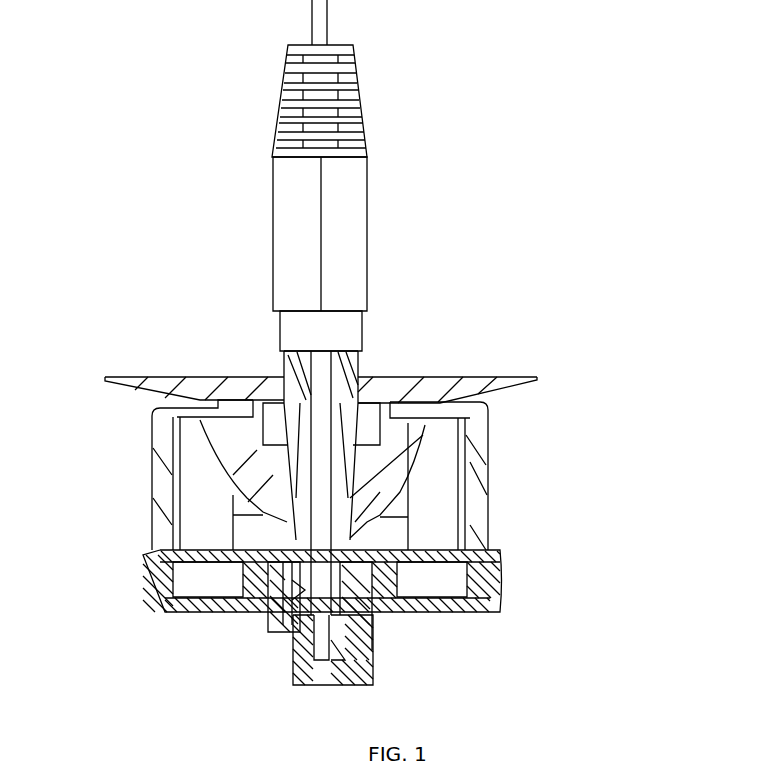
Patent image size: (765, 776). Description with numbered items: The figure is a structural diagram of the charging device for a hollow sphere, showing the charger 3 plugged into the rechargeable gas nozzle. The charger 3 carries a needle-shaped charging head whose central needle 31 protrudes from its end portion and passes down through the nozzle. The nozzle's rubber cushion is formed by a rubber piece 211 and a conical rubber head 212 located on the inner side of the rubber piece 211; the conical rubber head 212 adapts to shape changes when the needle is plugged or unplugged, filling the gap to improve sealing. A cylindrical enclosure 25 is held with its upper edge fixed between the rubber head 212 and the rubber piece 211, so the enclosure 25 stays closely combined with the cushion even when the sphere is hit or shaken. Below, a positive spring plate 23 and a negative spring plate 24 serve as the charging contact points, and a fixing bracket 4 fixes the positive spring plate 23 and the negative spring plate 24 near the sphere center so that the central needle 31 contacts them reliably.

The charger 3 is at (352, 255).
The central needle 31 is at (322, 446).
The rubber piece 211 is at (478, 378).
The enclosure 25 is at (483, 450).
The rubber head 212 is at (262, 478).
The fixing bracket 4 is at (488, 592).
The negative spring plate 24 is at (287, 604).
The positive spring plate 23 is at (353, 645).